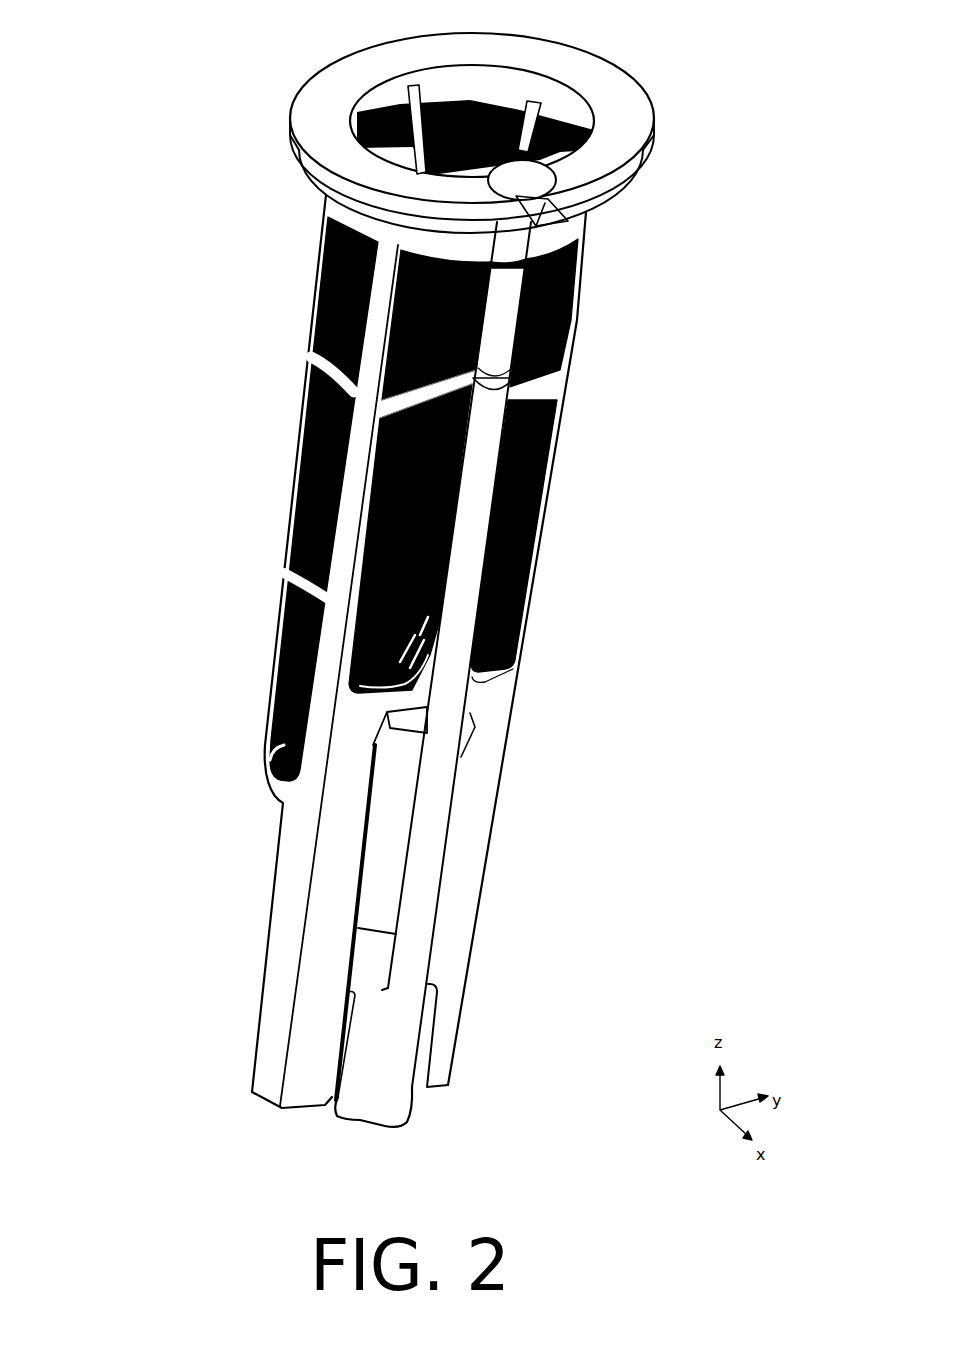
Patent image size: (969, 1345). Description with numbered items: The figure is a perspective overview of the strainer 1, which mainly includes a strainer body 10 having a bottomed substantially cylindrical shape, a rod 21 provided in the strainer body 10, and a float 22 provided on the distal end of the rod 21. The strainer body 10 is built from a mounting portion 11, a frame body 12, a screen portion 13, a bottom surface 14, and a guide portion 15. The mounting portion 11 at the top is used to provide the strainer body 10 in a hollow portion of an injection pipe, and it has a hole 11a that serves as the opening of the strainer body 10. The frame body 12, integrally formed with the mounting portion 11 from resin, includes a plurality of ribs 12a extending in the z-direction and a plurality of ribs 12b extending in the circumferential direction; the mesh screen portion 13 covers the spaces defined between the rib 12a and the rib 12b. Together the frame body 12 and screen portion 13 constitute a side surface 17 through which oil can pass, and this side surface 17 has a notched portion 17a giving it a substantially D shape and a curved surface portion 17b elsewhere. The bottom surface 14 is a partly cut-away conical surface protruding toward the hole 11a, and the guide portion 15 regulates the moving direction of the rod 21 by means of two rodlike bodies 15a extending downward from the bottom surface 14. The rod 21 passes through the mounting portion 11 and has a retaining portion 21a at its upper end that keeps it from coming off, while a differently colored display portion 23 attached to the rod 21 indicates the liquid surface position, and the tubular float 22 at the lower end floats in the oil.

The strainer 1 is at (646, 30).
The strainer body 10 is at (128, 276).
The mounting portion 11 is at (316, 136).
The hole 11a is at (452, 92).
The frame body 12 is at (193, 302).
The rib 12a is at (378, 333).
The rib 12b is at (343, 386).
The screen portion 13 is at (327, 485).
The bottom surface 14 is at (427, 660).
The guide portion 15 is at (178, 843).
The rodlike body 15a is at (463, 850).
The side surface 17 is at (128, 318).
The notched portion 17a is at (497, 693).
The curved surface portion 17b is at (278, 601).
The rod 21 is at (480, 487).
The retaining portion 21a is at (533, 180).
The float 22 is at (353, 1050).
The display portion 23 is at (515, 388).